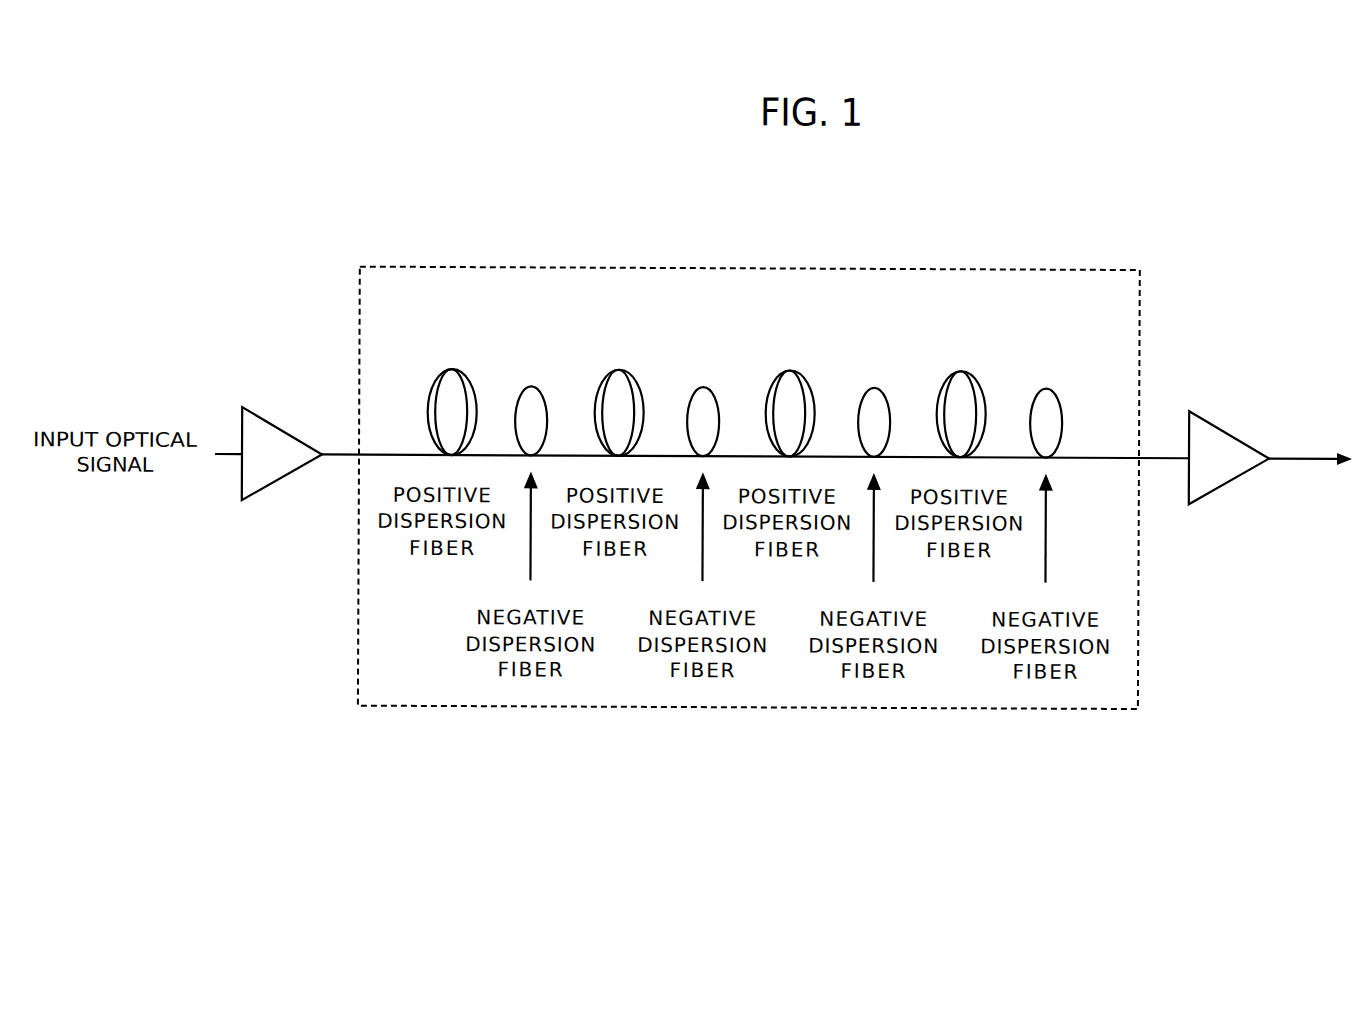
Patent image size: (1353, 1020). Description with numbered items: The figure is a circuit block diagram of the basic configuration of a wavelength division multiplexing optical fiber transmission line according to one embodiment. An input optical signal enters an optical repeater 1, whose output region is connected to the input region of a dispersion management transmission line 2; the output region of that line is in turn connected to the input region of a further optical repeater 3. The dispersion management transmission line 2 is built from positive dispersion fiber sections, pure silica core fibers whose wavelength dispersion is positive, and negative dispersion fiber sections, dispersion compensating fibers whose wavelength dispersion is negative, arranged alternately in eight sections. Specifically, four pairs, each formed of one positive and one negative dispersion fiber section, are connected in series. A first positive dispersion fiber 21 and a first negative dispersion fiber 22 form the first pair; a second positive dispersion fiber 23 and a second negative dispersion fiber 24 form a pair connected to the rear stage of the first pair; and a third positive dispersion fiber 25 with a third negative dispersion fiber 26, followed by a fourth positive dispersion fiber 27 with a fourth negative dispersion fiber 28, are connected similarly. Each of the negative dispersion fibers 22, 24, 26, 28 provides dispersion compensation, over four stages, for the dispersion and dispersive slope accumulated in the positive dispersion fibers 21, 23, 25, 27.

The optical repeater 1 is at (272, 418).
The dispersion management transmission line 2 is at (760, 266).
The optical repeater 3 is at (1212, 418).
The first positive dispersion fiber 21 is at (452, 369).
The first negative dispersion fiber 22 is at (531, 386).
The second positive dispersion fiber 23 is at (619, 369).
The second negative dispersion fiber 24 is at (703, 386).
The third positive dispersion fiber 25 is at (790, 369).
The third negative dispersion fiber 26 is at (874, 386).
The fourth positive dispersion fiber 27 is at (961, 369).
The fourth negative dispersion fiber 28 is at (1046, 386).